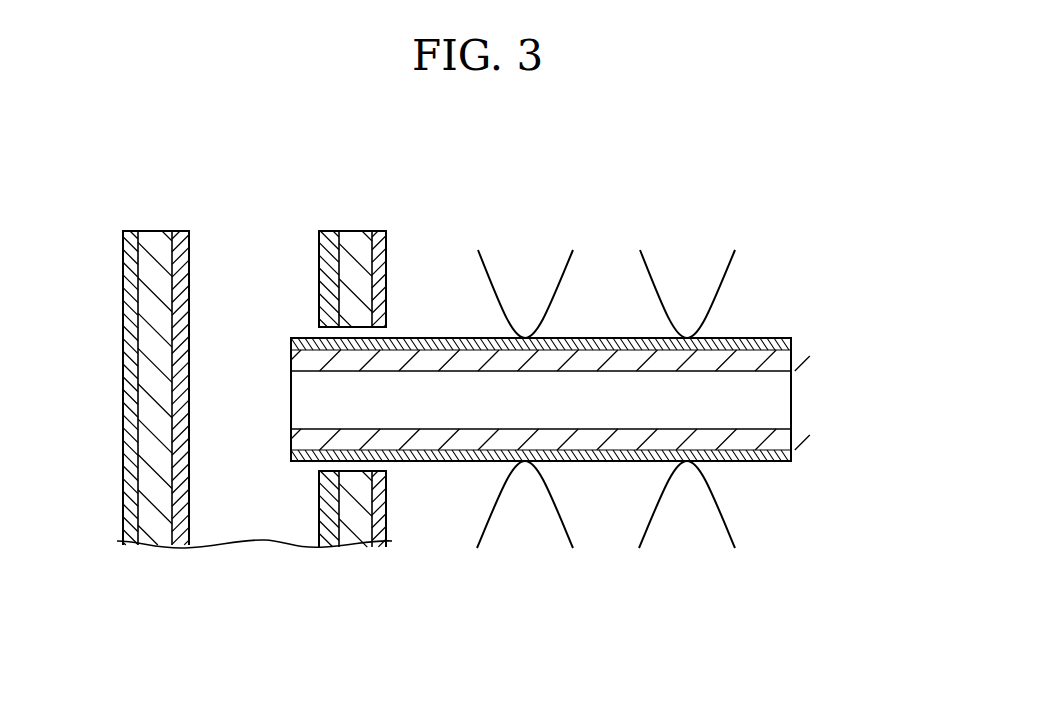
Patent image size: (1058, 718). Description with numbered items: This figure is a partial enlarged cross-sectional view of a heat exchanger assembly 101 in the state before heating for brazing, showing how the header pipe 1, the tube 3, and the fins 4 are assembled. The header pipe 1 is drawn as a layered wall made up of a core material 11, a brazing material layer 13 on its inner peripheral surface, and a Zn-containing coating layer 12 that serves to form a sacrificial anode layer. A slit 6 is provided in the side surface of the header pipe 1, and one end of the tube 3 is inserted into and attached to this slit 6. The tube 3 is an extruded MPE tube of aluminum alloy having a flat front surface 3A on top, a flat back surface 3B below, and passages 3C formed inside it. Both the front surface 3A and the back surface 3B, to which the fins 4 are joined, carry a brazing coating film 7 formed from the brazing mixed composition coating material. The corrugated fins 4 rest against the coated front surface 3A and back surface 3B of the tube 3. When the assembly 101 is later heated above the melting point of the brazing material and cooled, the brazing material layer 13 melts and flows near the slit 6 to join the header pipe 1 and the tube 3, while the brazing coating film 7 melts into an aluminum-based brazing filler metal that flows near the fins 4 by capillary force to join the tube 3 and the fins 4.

The heat exchanger assembly 101 is at (610, 212).
The header pipe 1 is at (123, 331).
The core material 11 is at (152, 258).
The Zn-containing coating layer 12 is at (378, 250).
The brazing material layer 13 is at (180, 270).
The tube 3 is at (785, 325).
The front surface 3A is at (598, 350).
The back surface 3B is at (604, 452).
The passage 3C is at (755, 398).
The fin 4 is at (488, 287).
The slit 6 is at (327, 465).
The brazing coating film 7 is at (772, 343).